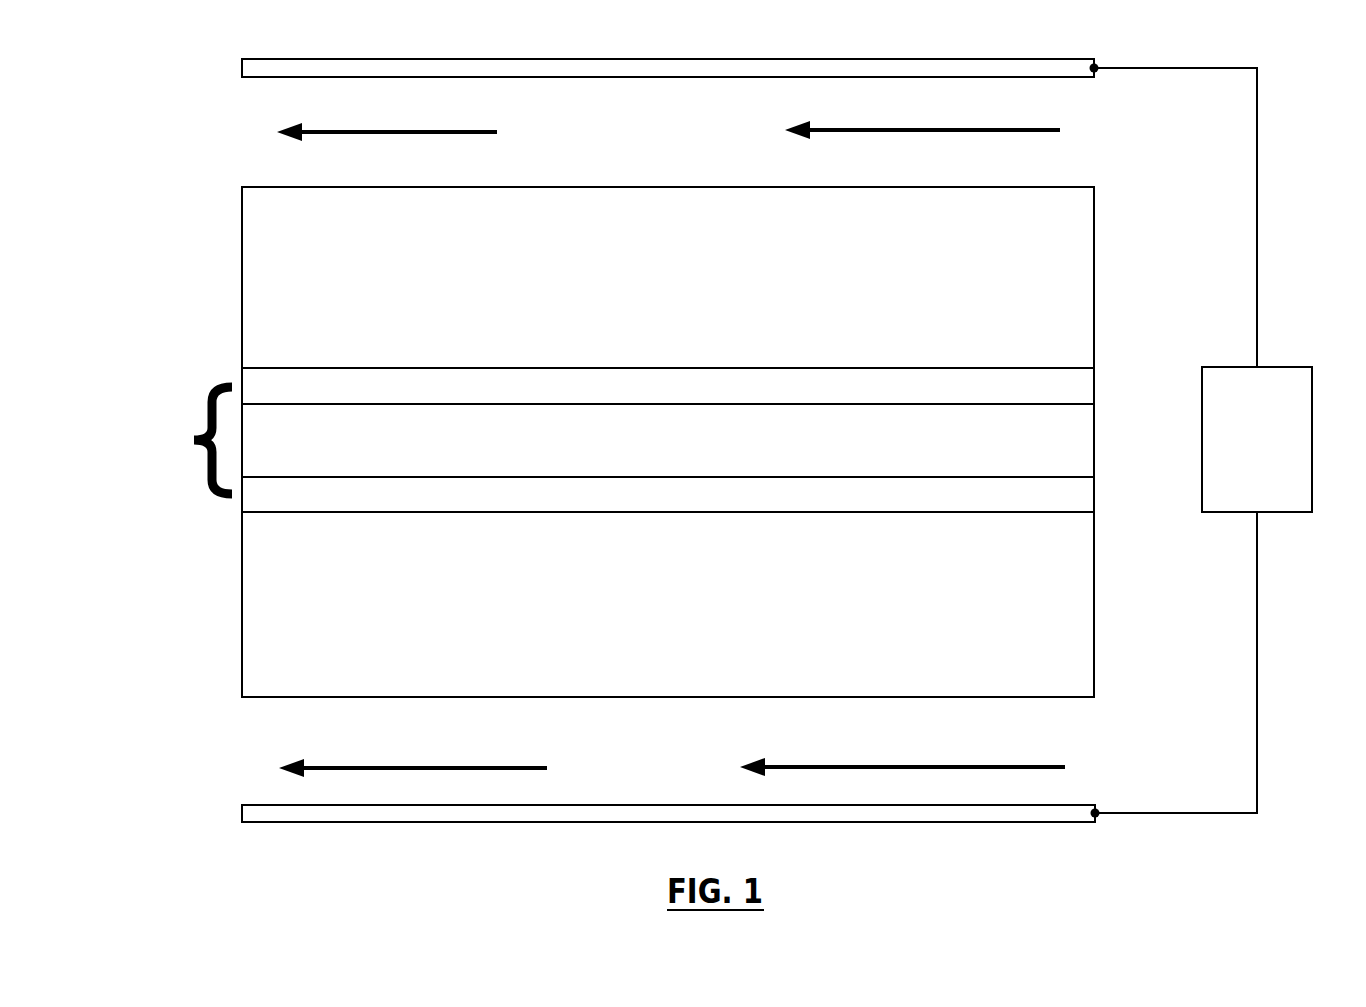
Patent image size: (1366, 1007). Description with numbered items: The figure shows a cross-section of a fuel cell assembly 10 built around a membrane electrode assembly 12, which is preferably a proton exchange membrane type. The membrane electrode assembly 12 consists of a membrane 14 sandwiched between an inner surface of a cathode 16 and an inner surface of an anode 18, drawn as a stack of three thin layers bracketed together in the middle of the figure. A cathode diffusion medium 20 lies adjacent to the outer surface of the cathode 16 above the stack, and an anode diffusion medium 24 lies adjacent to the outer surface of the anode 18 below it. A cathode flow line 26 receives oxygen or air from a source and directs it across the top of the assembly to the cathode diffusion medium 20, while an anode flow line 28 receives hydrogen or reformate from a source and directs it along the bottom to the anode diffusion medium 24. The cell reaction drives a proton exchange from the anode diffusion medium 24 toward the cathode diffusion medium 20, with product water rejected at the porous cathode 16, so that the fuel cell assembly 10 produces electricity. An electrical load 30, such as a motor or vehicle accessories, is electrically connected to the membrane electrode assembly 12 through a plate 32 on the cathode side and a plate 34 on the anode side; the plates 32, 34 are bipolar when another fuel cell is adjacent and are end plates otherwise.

The fuel cell assembly 10 is at (1298, 223).
The membrane electrode assembly 12 is at (192, 440).
The membrane 14 is at (925, 451).
The cathode 16 is at (925, 397).
The anode 18 is at (925, 505).
The cathode diffusion medium 20 is at (925, 278).
The anode diffusion medium 24 is at (926, 595).
The cathode flow line 26 is at (390, 124).
The anode flow line 28 is at (410, 753).
The electrical load 30 is at (1202, 402).
The plate 32 is at (513, 76).
The plate 34 is at (507, 805).